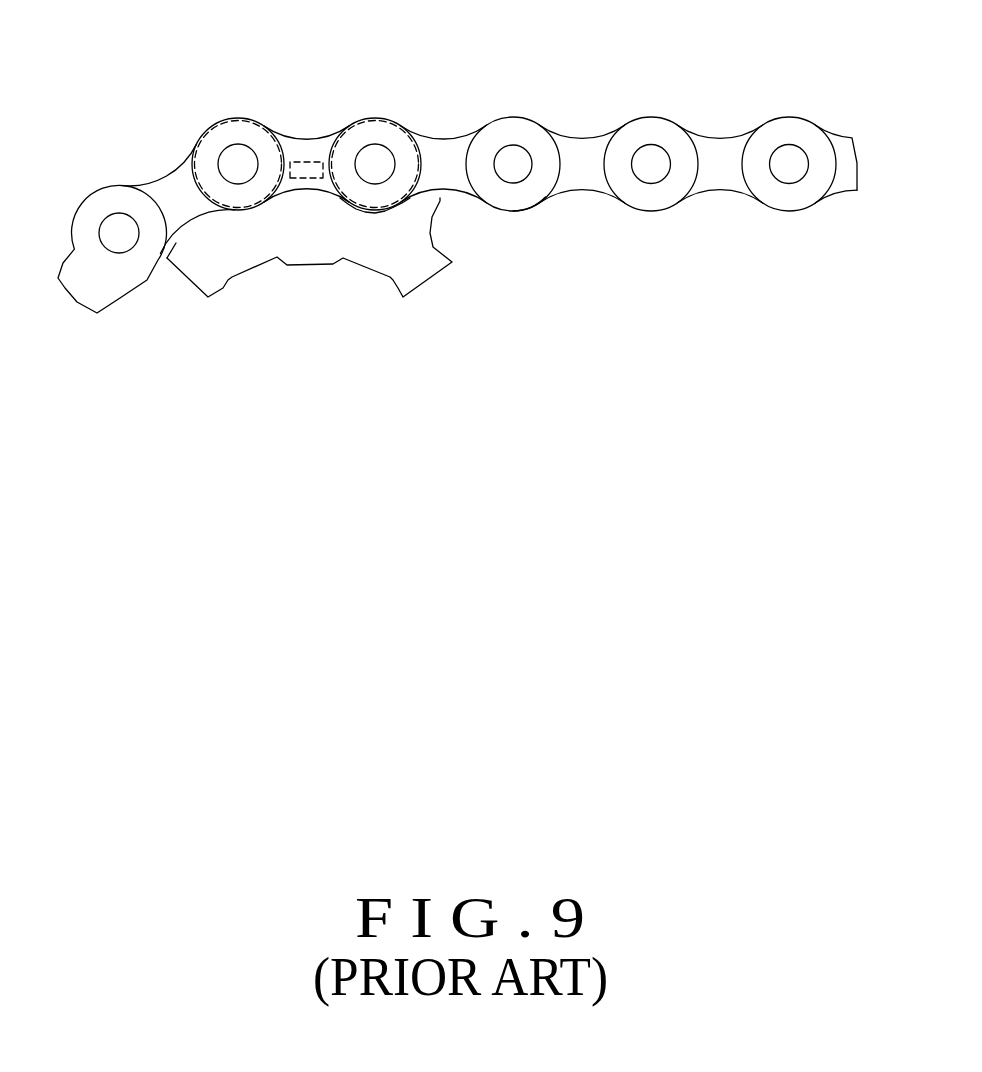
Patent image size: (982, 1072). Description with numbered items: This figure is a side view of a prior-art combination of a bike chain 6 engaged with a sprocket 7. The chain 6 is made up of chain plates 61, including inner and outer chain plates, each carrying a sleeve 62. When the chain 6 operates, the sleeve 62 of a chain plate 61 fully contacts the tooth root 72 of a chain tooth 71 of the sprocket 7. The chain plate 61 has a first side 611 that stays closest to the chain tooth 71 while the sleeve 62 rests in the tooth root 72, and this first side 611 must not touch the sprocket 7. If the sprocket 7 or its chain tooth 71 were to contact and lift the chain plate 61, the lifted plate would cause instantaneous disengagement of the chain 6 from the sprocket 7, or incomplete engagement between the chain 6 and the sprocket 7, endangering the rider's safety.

The chain 6 is at (788, 112).
The chain plate 61 is at (658, 132).
The first side 611 is at (540, 205).
The sleeve 62 is at (245, 120).
The sprocket 7 is at (317, 245).
The chain tooth 71 is at (299, 178).
The tooth root 72 is at (358, 214).